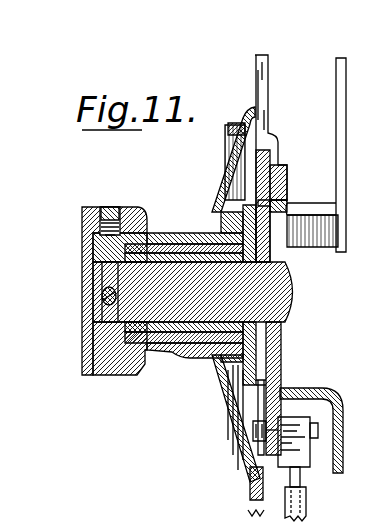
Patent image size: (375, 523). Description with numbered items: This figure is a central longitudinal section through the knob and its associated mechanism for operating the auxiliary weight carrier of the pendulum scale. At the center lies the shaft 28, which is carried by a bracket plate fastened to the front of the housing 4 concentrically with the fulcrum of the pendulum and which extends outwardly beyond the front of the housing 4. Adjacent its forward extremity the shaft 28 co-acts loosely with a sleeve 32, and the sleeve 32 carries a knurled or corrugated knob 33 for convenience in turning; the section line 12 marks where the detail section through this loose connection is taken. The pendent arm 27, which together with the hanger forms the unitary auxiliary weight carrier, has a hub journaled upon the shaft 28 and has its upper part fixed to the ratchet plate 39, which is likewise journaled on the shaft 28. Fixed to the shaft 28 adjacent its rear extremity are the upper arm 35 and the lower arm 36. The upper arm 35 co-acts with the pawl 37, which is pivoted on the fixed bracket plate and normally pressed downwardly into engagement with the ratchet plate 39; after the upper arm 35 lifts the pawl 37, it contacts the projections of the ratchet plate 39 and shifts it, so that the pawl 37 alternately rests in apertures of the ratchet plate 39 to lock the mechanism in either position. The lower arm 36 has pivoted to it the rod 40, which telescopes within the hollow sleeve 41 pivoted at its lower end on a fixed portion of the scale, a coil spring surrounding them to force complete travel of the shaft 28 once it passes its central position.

The housing 4 is at (250, 490).
The section line 12— 12 is at (110, 204).
The pendent arm 27 is at (343, 440).
The shaft 28 is at (282, 300).
The sleeve 32 is at (173, 357).
The knob 33 is at (82, 368).
The upper arm 35 is at (283, 203).
The lower arm 36 is at (282, 375).
The pawl 37 is at (268, 158).
The ratchet plate 39 is at (258, 347).
The rod 40 is at (300, 478).
The hollow sleeve 41 is at (306, 508).